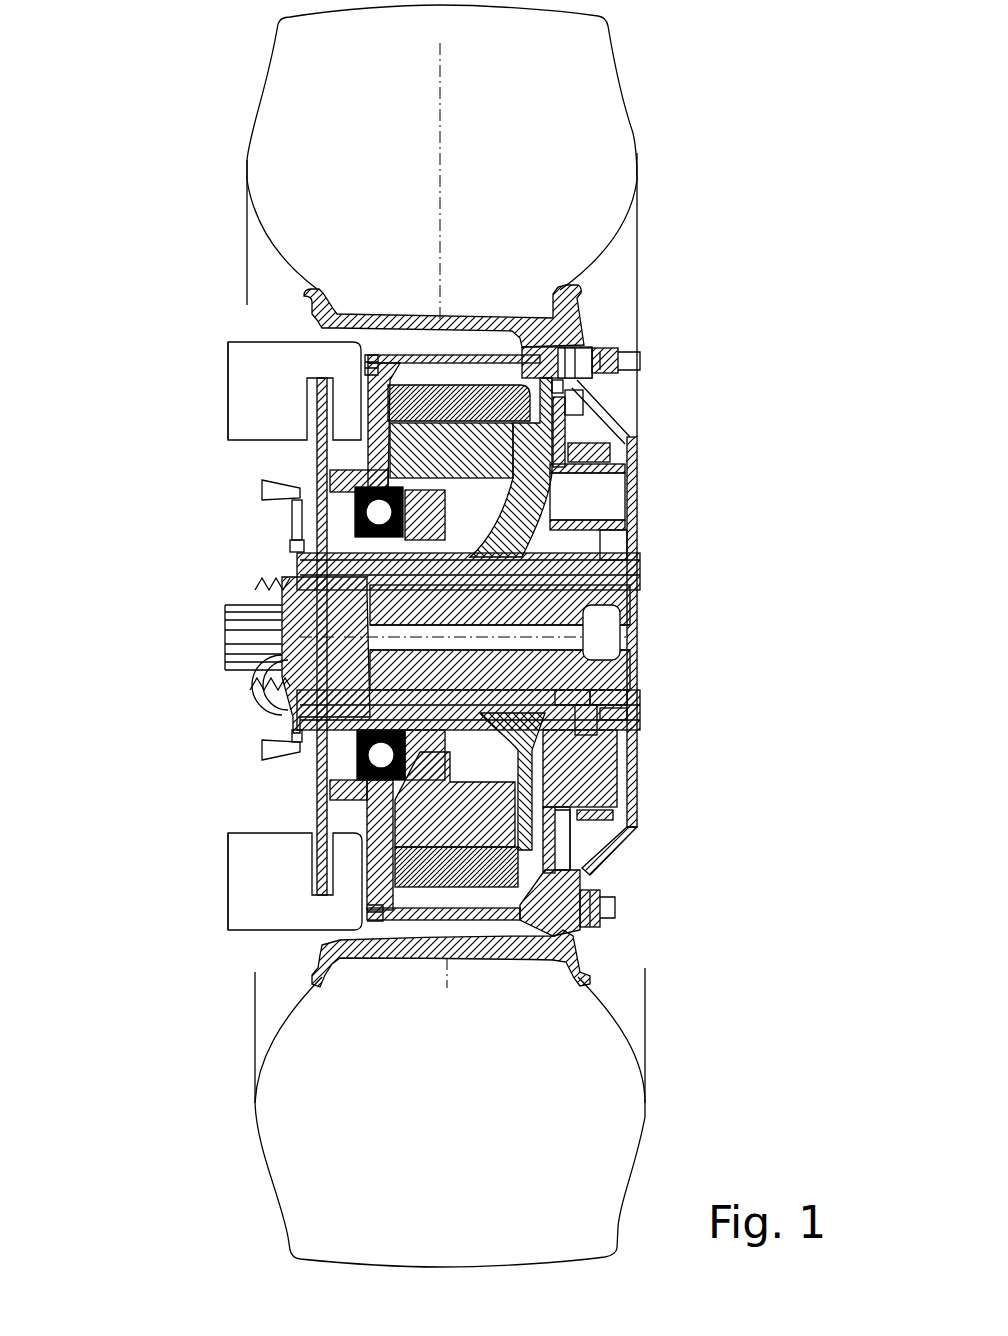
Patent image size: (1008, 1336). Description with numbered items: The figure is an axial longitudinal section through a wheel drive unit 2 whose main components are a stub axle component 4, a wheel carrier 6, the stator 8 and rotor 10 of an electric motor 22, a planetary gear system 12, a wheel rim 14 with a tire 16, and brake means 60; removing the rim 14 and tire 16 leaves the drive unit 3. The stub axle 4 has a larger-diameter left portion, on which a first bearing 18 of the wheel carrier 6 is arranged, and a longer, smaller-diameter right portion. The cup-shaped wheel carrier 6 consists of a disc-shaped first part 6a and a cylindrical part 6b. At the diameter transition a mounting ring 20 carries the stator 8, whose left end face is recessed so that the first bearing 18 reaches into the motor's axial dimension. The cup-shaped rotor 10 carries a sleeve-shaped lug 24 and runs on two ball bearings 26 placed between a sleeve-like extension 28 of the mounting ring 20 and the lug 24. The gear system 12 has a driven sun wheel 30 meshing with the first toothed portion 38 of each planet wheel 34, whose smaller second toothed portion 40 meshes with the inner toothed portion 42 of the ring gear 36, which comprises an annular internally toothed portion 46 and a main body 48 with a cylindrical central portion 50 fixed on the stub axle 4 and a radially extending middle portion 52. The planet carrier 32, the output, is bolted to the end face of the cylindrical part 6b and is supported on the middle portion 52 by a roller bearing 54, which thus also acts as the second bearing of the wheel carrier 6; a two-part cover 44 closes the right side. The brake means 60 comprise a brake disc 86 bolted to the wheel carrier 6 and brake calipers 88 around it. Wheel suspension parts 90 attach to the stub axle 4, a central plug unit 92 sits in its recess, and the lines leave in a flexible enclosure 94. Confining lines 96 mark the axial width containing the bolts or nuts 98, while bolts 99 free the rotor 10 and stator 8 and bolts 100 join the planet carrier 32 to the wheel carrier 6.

The wheel drive unit 2 is at (688, 88).
The drive unit 3 is at (677, 518).
The stub axle component 4 is at (387, 668).
The wheel carrier 6 is at (357, 458).
The first part of wheel carrier 6a is at (367, 415).
The cylindrical part of wheel carrier 6b is at (420, 351).
The stator 8 is at (318, 873).
The rotor 10 is at (520, 873).
The gear system 12 is at (580, 427).
The wheel rim 14 is at (577, 317).
The tire 16 is at (570, 82).
The first bearing 18 is at (300, 512).
The mounting ring 20 is at (342, 778).
The electric motor 22 is at (560, 940).
The sleeve-shaped lug 24 is at (417, 813).
The ball bearings of rotor 26 is at (292, 547).
The sleeve-like extension 28 is at (330, 605).
The sun wheel 30 is at (643, 723).
The planet carrier 32 is at (638, 790).
The planet wheels 34 is at (572, 415).
The ring gear 36 is at (605, 438).
The first toothed portion 38 is at (573, 398).
The second toothed portion 40 is at (640, 502).
The inner toothed portion 42 is at (642, 827).
The two-part cover 44 is at (640, 572).
The annular internally toothed portion 46 is at (595, 832).
The main body of ring gear 48 is at (640, 683).
The central portion 50 is at (640, 657).
The middle portion 52 is at (640, 703).
The bearing 54 is at (640, 747).
The brake means 60 is at (262, 334).
The brake disc 86 is at (240, 900).
The brake calipers 88 is at (257, 913).
The wheel suspension parts 90 is at (257, 480).
The plug unit 92 is at (302, 608).
The enclosure 94 is at (262, 683).
The confining lines 96 is at (245, 243).
The bolts or nuts 98 is at (612, 342).
The bolts 99 is at (640, 545).
The bolts 100 is at (483, 897).